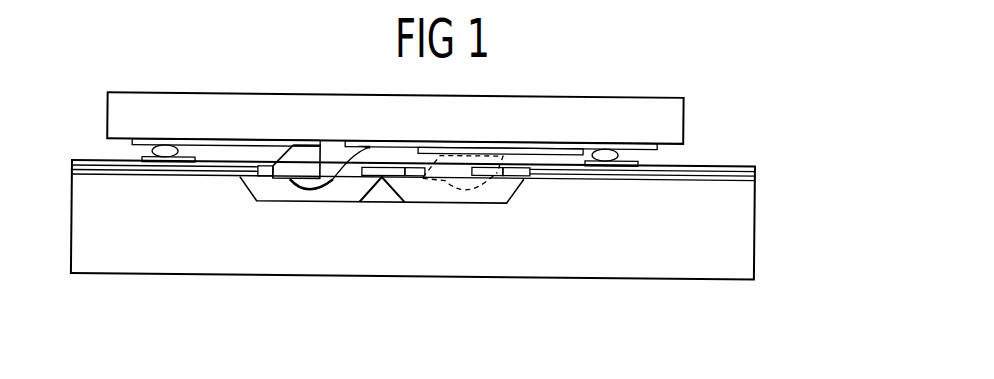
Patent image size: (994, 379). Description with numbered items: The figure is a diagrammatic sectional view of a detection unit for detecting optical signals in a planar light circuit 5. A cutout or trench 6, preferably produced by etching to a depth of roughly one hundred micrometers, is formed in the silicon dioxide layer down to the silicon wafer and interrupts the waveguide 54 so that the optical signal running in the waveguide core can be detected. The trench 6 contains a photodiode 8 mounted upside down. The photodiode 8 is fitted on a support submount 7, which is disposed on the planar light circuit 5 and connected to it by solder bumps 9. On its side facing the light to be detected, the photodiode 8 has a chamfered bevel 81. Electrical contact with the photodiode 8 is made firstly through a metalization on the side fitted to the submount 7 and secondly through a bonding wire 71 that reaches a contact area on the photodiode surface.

The planar light circuit 5 is at (720, 158).
The waveguide 54 is at (757, 165).
The trench 6 is at (410, 188).
The support submount 7 is at (116, 116).
The bonding wire 71 is at (326, 188).
The photodiode 8 is at (283, 170).
The chamfered bevel 81 is at (280, 148).
The solder bumps 9 is at (165, 161).